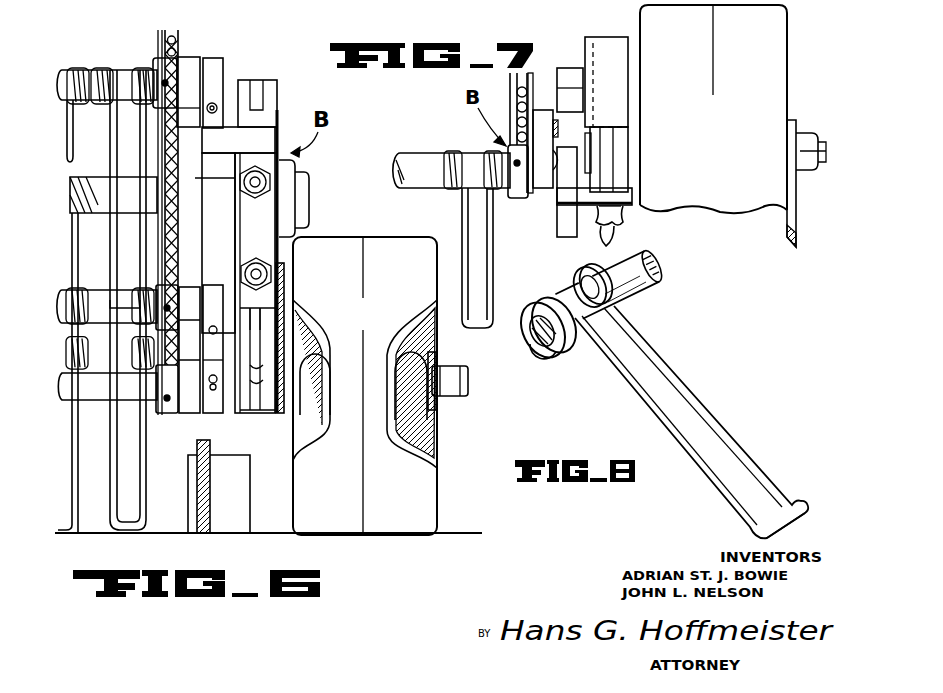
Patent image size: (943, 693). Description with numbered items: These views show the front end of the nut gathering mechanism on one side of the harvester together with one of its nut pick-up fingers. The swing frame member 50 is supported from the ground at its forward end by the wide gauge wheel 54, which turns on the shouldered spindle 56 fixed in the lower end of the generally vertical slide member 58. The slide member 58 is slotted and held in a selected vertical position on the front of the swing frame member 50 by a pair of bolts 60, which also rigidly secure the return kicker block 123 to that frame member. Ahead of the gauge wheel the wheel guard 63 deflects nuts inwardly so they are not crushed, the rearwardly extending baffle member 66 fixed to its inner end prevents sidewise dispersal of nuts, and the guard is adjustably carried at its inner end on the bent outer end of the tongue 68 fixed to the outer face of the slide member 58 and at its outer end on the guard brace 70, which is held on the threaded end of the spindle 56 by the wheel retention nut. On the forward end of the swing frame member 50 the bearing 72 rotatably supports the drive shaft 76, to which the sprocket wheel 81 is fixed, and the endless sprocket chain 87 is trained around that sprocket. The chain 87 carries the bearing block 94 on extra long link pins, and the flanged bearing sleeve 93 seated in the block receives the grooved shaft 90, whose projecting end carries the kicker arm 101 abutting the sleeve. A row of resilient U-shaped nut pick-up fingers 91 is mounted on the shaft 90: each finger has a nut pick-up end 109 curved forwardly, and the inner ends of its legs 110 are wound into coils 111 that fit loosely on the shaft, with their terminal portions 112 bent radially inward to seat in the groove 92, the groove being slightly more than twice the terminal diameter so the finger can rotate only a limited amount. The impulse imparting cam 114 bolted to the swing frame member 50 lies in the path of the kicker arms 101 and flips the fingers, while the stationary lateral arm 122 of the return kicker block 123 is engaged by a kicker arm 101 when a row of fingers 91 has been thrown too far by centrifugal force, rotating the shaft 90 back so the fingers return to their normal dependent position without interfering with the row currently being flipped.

In FIG. 6, the swing frame member 50 is at (262, 318).
In FIG. 7, the swing frame member 50 is at (615, 74).
In FIG. 6, the gauge wheel 54 is at (420, 482).
In FIG. 7, the gauge wheel 54 is at (734, 204).
In FIG. 6, the shouldered spindle 56 is at (468, 386).
In FIG. 7, the shouldered spindle 56 is at (820, 142).
In FIG. 6, the slide member 58 is at (270, 333).
In FIG. 7, the slide member 58 is at (612, 151).
In FIG. 6, the bolts 60 is at (258, 258).
In FIG. 7, the bolts 60 is at (611, 243).
In FIG. 6, the wheel guard 63 is at (210, 489).
In FIG. 6, the baffle member 66 is at (212, 520).
In FIG. 6, the tongue 68 is at (284, 340).
In FIG. 7, the tongue 68 is at (624, 218).
In FIG. 6, the guard brace 70 is at (438, 406).
In FIG. 7, the guard brace 70 is at (790, 246).
In FIG. 6, the bearing 72 is at (296, 172).
In FIG. 6, the drive shaft 76 is at (305, 187).
In FIG. 6, the sprocket wheel 81 is at (194, 207).
In FIG. 6, the endless sprocket chain 87 is at (166, 242).
In FIG. 7, the endless sprocket chain 87 is at (534, 78).
In FIG. 6, the shaft 90 is at (125, 70).
In FIG. 7, the shaft 90 is at (410, 162).
In FIG. 8, the shaft 90 is at (630, 292).
In FIG. 6, the nut pick-up finger 91 is at (100, 154).
In FIG. 7, the nut pick-up finger 91 is at (492, 290).
In FIG. 8, the nut pick-up finger 91 is at (712, 426).
In FIG. 8, the groove 92 is at (554, 354).
In FIG. 6, the flanged bearing sleeve 93 is at (178, 57).
In FIG. 7, the flanged bearing sleeve 93 is at (530, 202).
In FIG. 6, the bearing block 94 is at (188, 70).
In FIG. 7, the bearing block 94 is at (556, 126).
In FIG. 6, the kicker arm 101 is at (210, 77).
In FIG. 7, the kicker arm 101 is at (568, 236).
In FIG. 8, the nut pick-up end 109 is at (798, 506).
In FIG. 8, the legs 110 is at (648, 378).
In FIG. 8, the coils 111 is at (544, 312).
In FIG. 8, the terminal portions 112 is at (616, 280).
In FIG. 6, the impulse imparting cam 114 is at (231, 238).
In FIG. 7, the impulse imparting cam 114 is at (572, 85).
In FIG. 6, the lateral arm 122 is at (212, 147).
In FIG. 7, the lateral arm 122 is at (526, 165).
In FIG. 6, the return kicker block 123 is at (270, 137).
In FIG. 7, the return kicker block 123 is at (620, 191).